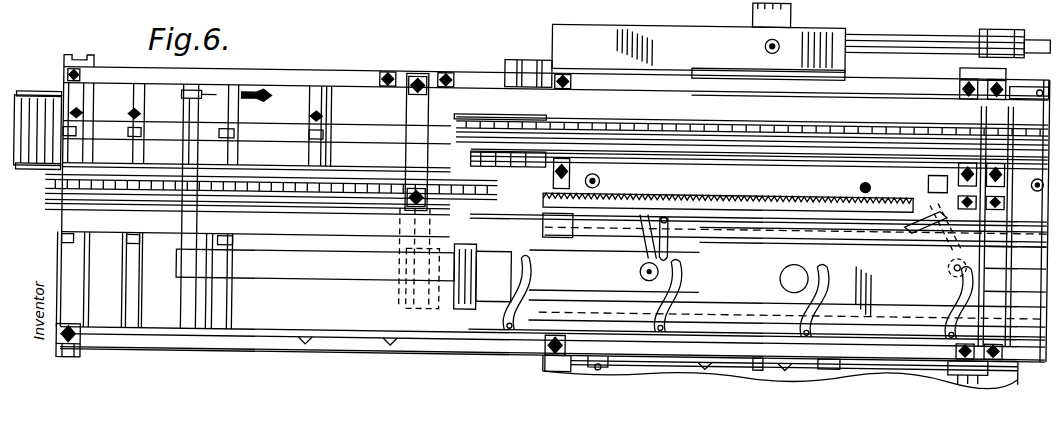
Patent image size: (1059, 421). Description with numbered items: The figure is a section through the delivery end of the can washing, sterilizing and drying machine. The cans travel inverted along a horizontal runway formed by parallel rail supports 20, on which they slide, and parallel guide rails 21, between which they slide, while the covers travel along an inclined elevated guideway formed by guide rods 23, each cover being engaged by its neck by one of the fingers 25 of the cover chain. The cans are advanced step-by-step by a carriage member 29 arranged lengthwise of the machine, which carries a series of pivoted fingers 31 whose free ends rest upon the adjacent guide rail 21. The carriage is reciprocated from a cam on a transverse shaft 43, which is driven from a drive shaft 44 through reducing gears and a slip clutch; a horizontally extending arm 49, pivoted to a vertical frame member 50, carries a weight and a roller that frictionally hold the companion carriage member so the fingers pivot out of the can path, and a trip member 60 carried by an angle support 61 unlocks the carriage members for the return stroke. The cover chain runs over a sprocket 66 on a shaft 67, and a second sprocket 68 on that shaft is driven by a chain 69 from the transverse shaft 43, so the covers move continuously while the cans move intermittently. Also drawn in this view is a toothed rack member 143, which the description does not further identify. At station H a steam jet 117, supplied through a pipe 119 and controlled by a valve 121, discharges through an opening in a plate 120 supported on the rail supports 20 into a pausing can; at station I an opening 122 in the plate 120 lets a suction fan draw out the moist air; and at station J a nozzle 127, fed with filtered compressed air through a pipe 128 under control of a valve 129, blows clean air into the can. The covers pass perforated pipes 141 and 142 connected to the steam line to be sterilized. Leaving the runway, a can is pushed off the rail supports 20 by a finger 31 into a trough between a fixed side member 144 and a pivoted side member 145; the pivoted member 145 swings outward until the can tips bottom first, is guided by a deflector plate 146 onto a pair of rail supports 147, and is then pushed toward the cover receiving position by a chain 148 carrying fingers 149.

The rail supports 20 is at (1034, 240).
The guide rails 21 is at (1036, 312).
The guide rods 23 is at (590, 88).
The fingers 25 is at (705, 118).
The carriage member 29 is at (768, 330).
The fingers 31 is at (822, 282).
The transverse shaft 43 is at (753, 362).
The drive shaft 44 is at (900, 48).
The horizontally extending arm 49 is at (862, 360).
The vertical frame member 50 is at (950, 362).
The trip member 60 is at (546, 360).
The angle support 61 is at (607, 364).
The sprocket 66 is at (482, 118).
The shaft 67 is at (503, 92).
The second sprocket 68 is at (472, 165).
The chain 69 is at (600, 154).
The steam jet 117 is at (948, 268).
The pipe 119 is at (957, 170).
The plate 120 is at (782, 240).
The valve 121 is at (935, 180).
The opening 122 is at (781, 278).
The nozzle 127 is at (642, 274).
The pipe 128 is at (638, 246).
The valve 129 is at (648, 196).
The perforated pipe 141 is at (1040, 172).
The perforated pipe 142 is at (845, 183).
The rack 143 is at (728, 202).
The fixed side member 144 is at (382, 270).
The pivoted side member 145 is at (384, 185).
The deflector plate 146 is at (200, 262).
The rail supports 147 is at (176, 143).
The chain 148 is at (288, 176).
The fingers 149 is at (195, 212).